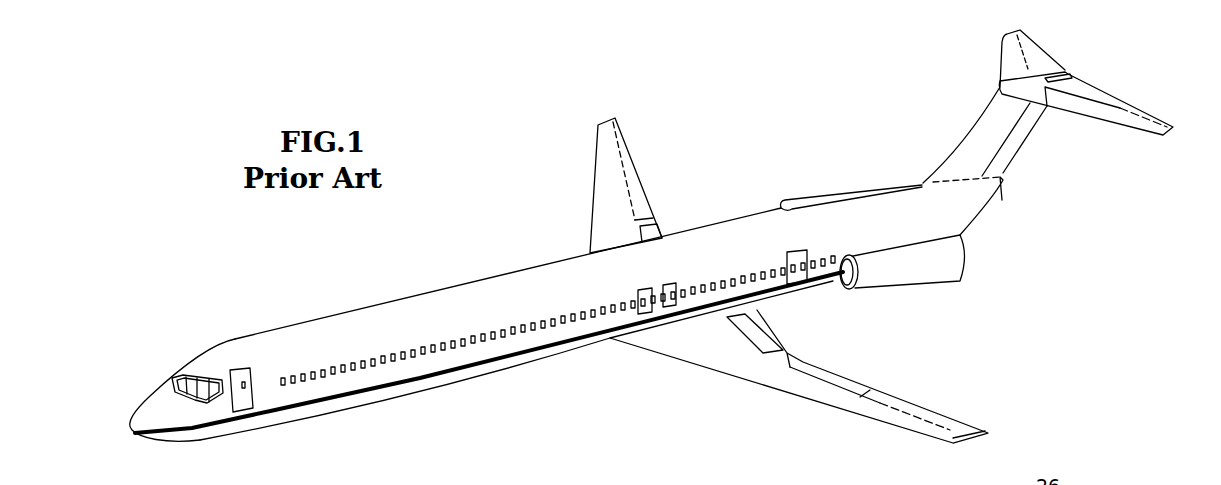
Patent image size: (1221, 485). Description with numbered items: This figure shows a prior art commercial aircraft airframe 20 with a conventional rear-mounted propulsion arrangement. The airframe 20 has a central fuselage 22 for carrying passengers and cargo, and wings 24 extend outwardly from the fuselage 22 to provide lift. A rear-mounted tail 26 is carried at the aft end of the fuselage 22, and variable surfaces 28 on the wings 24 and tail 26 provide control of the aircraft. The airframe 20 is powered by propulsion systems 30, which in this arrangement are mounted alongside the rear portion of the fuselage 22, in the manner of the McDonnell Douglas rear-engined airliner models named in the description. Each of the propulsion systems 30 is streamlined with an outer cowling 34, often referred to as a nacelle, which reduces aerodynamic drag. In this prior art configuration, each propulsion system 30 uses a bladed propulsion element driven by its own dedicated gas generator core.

The aircraft airframe 20 is at (651, 236).
The central fuselage 22 is at (443, 296).
The wings 24 is at (592, 205).
The tail 26 is at (968, 88).
The variable surfaces 28 is at (640, 192).
The propulsion systems 30 is at (835, 181).
The outer cowlings 34 is at (868, 188).